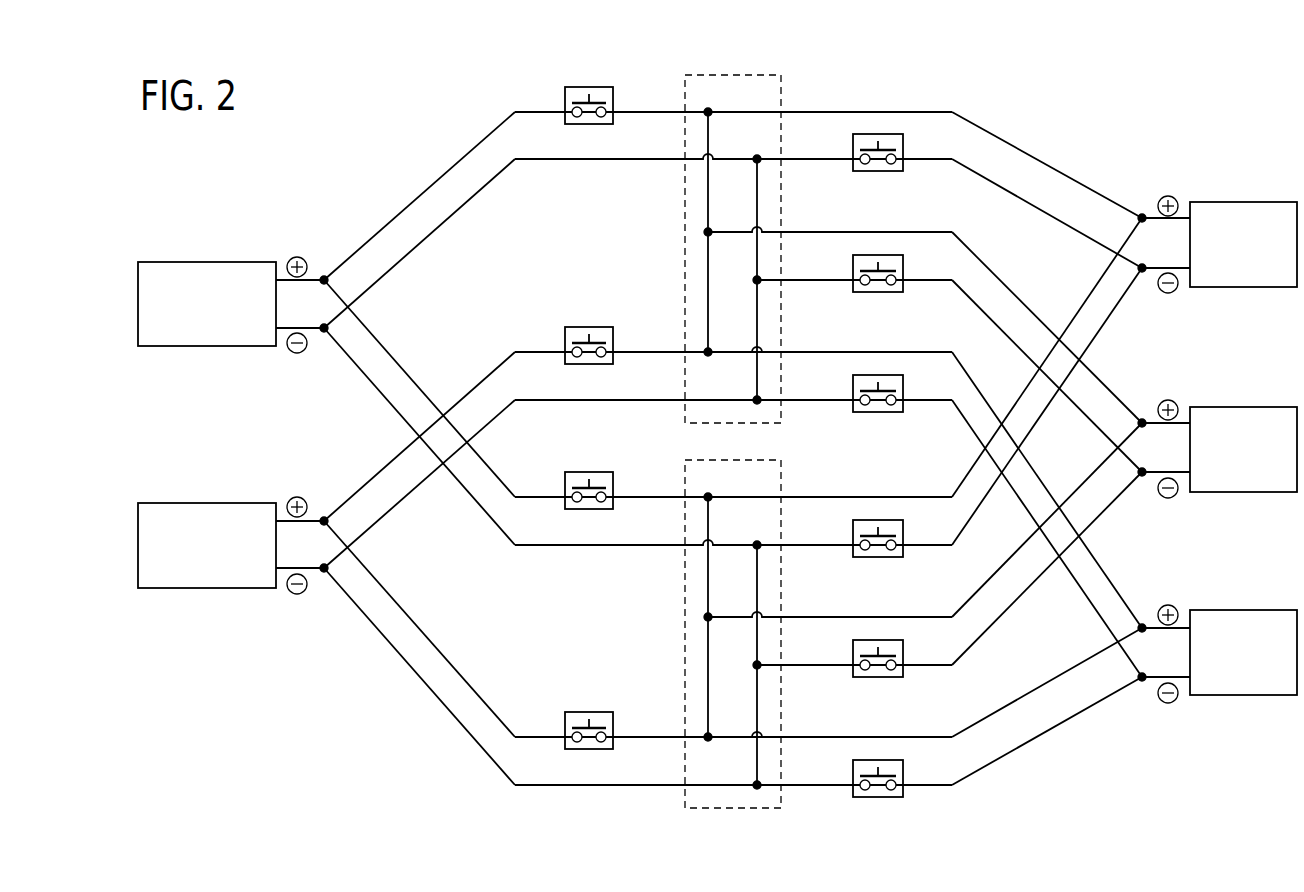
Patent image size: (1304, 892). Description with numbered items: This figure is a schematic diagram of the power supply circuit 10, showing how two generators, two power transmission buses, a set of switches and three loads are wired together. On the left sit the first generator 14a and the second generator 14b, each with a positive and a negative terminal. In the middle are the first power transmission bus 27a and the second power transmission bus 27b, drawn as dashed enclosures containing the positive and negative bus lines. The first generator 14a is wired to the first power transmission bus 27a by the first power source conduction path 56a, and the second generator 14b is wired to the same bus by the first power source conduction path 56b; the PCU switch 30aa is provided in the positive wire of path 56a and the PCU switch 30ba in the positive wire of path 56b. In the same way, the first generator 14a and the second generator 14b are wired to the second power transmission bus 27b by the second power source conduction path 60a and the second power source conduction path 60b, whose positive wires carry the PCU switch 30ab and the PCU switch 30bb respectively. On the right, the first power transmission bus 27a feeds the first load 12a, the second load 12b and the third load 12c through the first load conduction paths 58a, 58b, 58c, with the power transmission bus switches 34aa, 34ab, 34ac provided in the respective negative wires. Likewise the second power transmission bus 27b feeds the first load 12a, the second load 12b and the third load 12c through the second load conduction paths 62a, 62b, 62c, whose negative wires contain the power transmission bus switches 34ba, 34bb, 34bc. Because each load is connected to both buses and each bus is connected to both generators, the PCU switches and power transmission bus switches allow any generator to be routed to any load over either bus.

The power supply circuit 10 is at (406, 139).
The first load 12a is at (1243, 202).
The second load 12b is at (1243, 407).
The third load 12c is at (1243, 610).
The first generator 14a is at (199, 262).
The second generator 14b is at (209, 503).
The first power transmission bus 27a is at (685, 245).
The second power transmission bus 27b is at (685, 635).
The PCU switch 30aa is at (586, 87).
The PCU switch 30ab is at (586, 472).
The PCU switch 30ba is at (586, 327).
The PCU switch 30bb is at (586, 712).
The power transmission bus switch 34aa is at (890, 134).
The power transmission bus switch 34ab is at (890, 255).
The power transmission bus switch 34ac is at (890, 375).
The power transmission bus switch 34ba is at (890, 520).
The power transmission bus switch 34bb is at (890, 640).
The power transmission bus switch 34bc is at (890, 760).
The first power source conduction path 56a is at (633, 112).
The first power source conduction path 56b is at (633, 352).
The first load conduction path 58a is at (803, 159).
The first load conduction path 58b is at (803, 280).
The first load conduction path 58c is at (803, 400).
The second power source conduction path 60a is at (633, 497).
The second power source conduction path 60b is at (630, 785).
The second load conduction path 62a is at (803, 545).
The second load conduction path 62b is at (803, 665).
The second load conduction path 62c is at (803, 785).